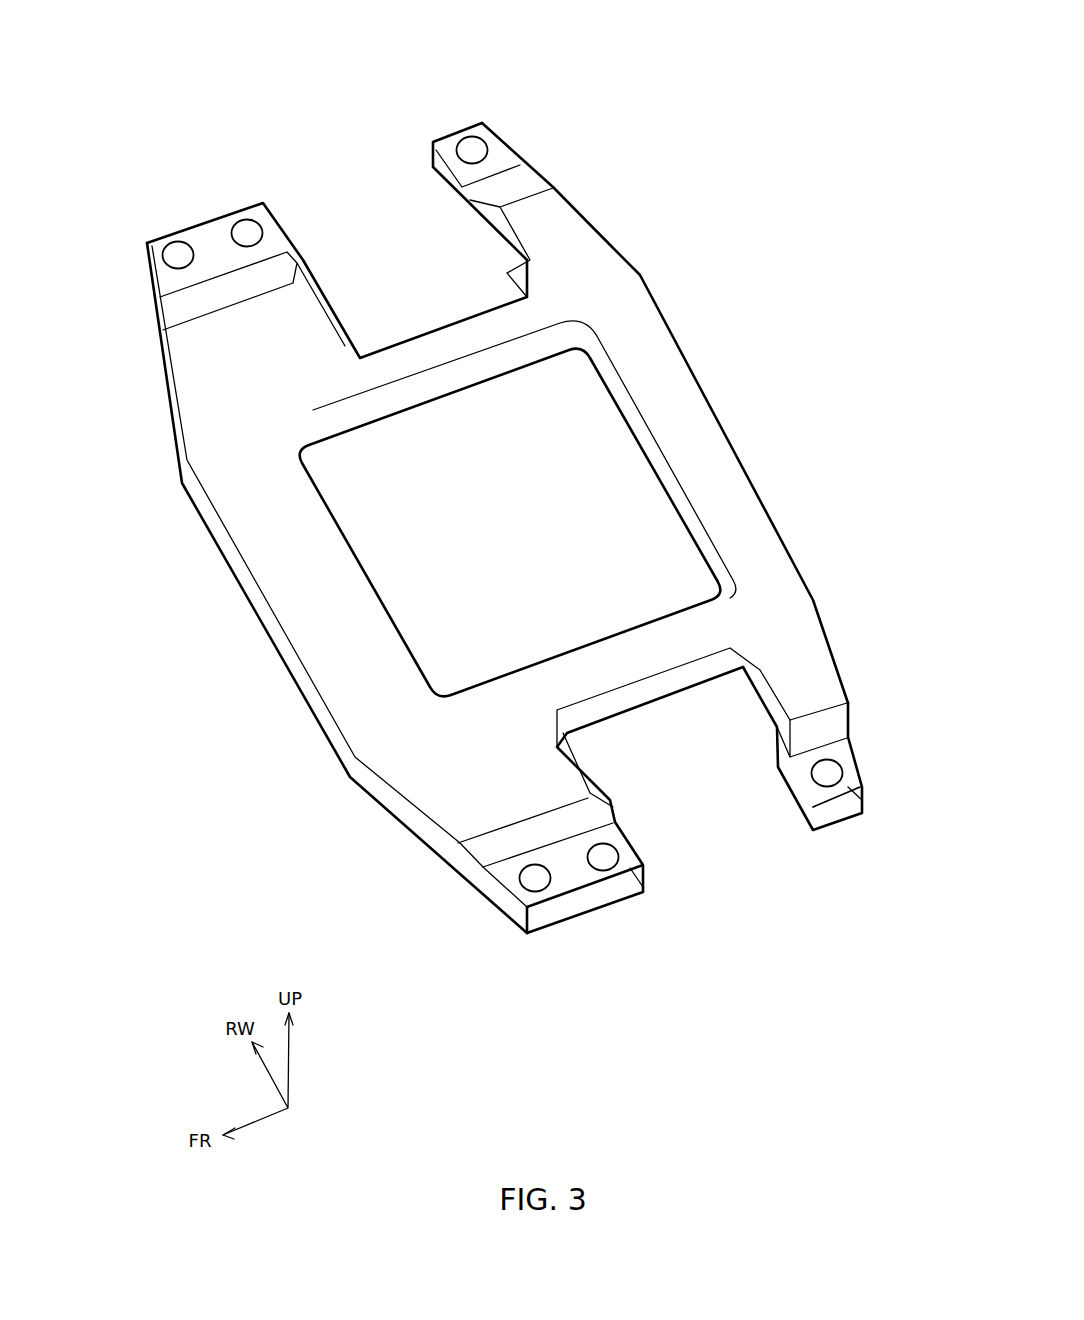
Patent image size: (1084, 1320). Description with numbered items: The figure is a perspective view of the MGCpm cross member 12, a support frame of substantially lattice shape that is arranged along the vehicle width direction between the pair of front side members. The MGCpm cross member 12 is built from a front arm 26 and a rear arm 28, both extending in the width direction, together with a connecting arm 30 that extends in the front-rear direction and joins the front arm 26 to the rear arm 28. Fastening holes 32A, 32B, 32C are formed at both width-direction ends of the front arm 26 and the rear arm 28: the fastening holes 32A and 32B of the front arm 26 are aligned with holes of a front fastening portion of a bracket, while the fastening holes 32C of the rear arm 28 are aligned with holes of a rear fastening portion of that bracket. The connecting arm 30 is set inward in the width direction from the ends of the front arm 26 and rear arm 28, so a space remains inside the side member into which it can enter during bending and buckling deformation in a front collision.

The MGCpm cross member 12 is at (750, 220).
The front arm 26 is at (170, 388).
The rear arm 28 is at (593, 222).
The connecting arm 30 is at (445, 385).
The fastening hole 32A is at (178, 253).
The fastening hole 32B is at (245, 232).
The fastening hole 32C is at (472, 145).